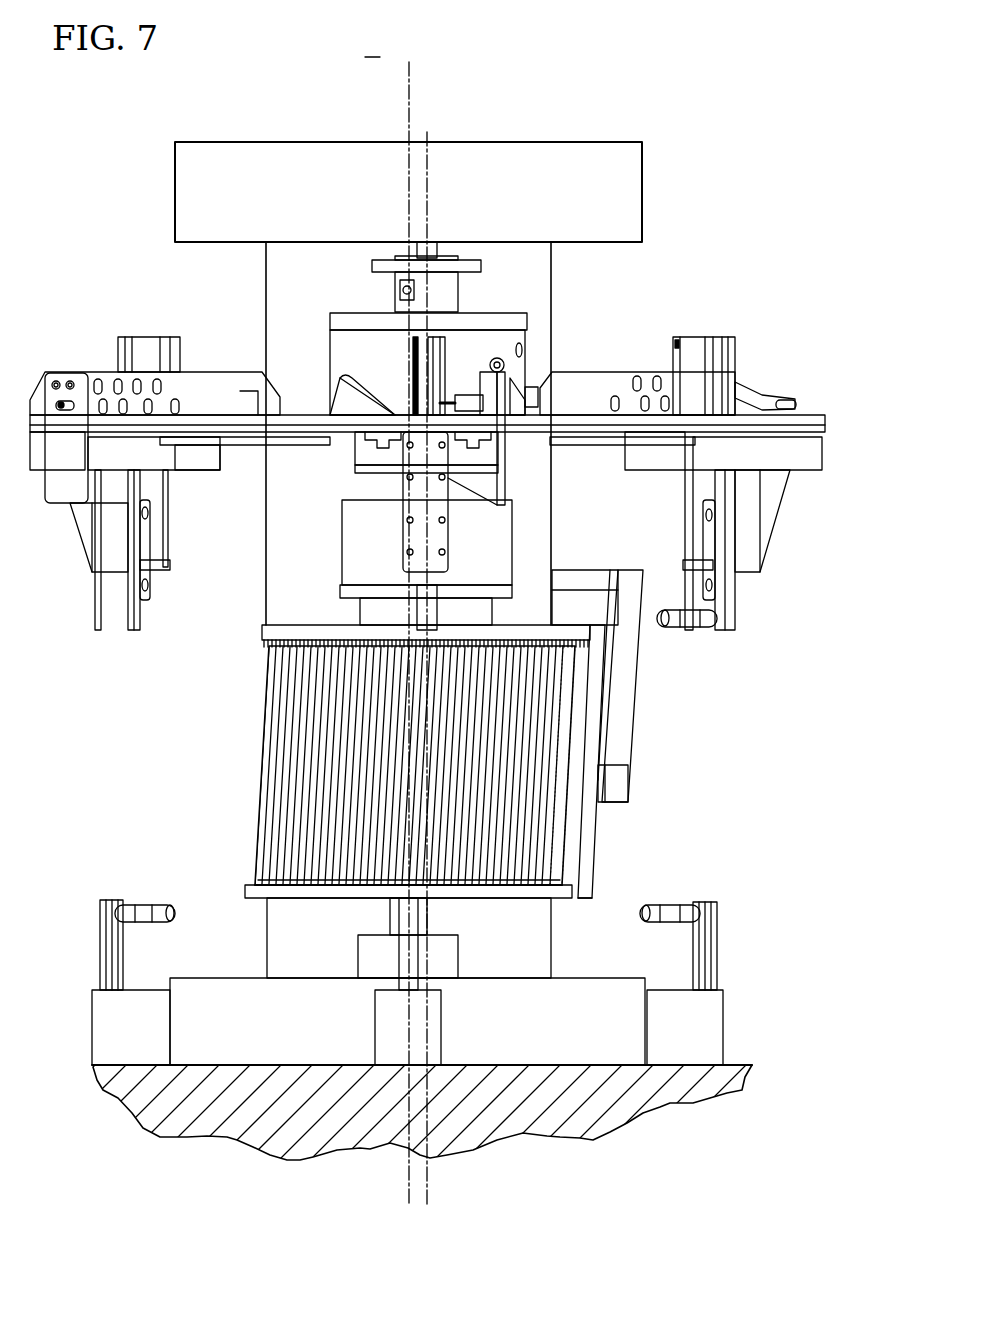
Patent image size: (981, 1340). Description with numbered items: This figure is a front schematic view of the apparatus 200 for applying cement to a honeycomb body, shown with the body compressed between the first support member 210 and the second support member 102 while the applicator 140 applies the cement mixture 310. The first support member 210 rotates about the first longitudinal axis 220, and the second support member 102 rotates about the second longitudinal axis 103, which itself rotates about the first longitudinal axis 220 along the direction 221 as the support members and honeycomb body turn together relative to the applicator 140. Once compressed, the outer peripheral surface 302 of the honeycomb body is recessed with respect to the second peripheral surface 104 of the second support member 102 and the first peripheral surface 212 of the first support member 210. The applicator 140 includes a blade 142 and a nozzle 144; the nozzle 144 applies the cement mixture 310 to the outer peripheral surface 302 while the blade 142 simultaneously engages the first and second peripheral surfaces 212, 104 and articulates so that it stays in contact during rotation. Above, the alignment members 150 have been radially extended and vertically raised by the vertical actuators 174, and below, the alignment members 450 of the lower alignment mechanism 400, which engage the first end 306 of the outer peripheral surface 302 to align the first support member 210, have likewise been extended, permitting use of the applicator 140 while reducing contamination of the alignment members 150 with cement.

The apparatus 200 is at (680, 115).
The first longitudinal axis 220 is at (409, 127).
The direction 221 is at (380, 57).
The second longitudinal axis 103 is at (428, 132).
The vertical actuator 174 is at (688, 337).
The second support member 102 is at (557, 625).
The applicator 140 is at (660, 735).
The nozzle 144 is at (600, 783).
The alignment members 150 is at (690, 636).
The second peripheral surface 104 is at (248, 642).
The outer peripheral surface 302 is at (252, 785).
The cement mixture 310 is at (572, 843).
The blade 142 is at (578, 870).
The first end 306 is at (257, 872).
The first peripheral surface 212 is at (228, 892).
The first support member 210 is at (585, 898).
The lower alignment mechanism 400 is at (745, 925).
The alignment members 450 is at (653, 903).